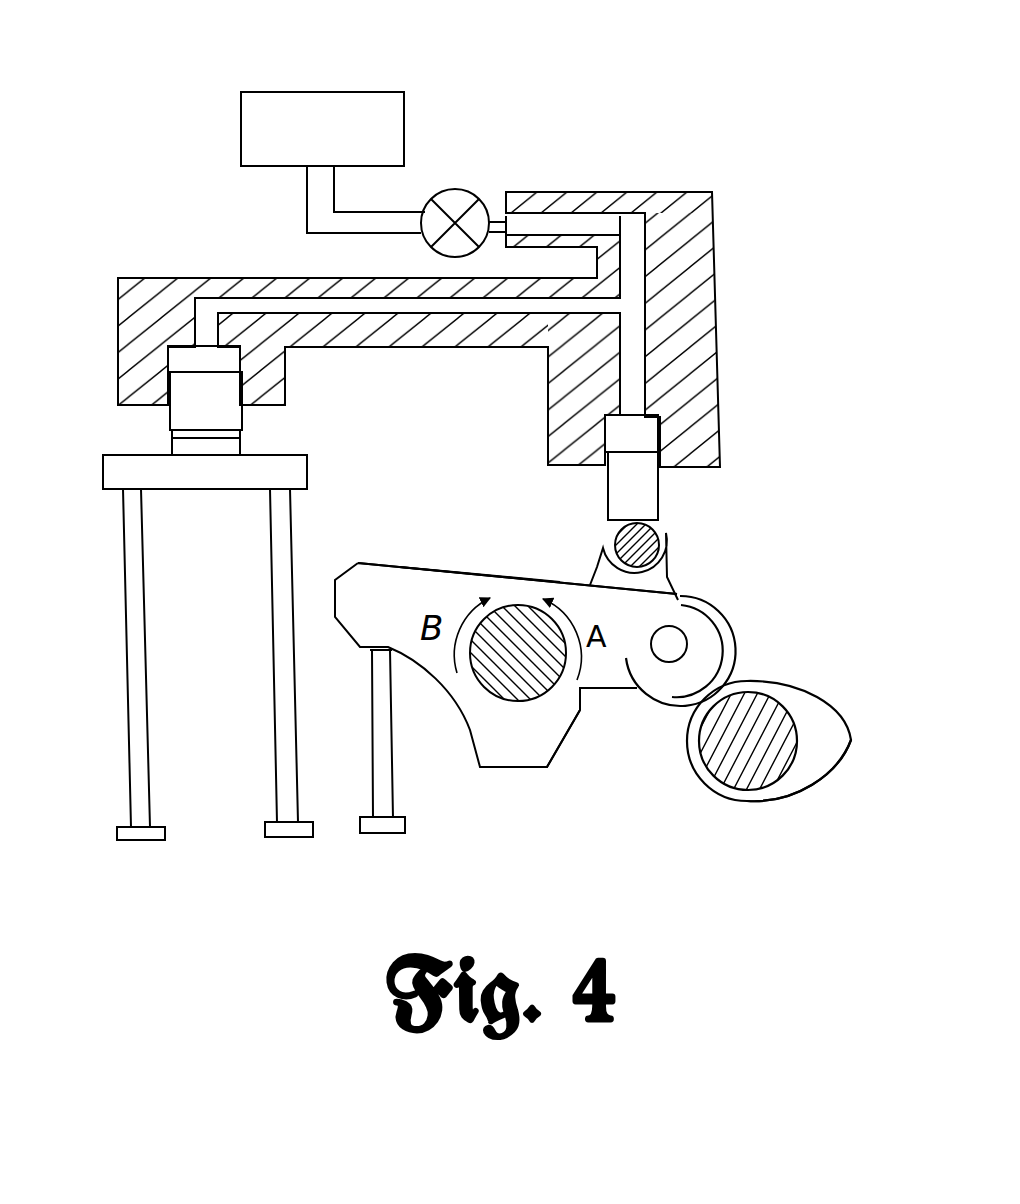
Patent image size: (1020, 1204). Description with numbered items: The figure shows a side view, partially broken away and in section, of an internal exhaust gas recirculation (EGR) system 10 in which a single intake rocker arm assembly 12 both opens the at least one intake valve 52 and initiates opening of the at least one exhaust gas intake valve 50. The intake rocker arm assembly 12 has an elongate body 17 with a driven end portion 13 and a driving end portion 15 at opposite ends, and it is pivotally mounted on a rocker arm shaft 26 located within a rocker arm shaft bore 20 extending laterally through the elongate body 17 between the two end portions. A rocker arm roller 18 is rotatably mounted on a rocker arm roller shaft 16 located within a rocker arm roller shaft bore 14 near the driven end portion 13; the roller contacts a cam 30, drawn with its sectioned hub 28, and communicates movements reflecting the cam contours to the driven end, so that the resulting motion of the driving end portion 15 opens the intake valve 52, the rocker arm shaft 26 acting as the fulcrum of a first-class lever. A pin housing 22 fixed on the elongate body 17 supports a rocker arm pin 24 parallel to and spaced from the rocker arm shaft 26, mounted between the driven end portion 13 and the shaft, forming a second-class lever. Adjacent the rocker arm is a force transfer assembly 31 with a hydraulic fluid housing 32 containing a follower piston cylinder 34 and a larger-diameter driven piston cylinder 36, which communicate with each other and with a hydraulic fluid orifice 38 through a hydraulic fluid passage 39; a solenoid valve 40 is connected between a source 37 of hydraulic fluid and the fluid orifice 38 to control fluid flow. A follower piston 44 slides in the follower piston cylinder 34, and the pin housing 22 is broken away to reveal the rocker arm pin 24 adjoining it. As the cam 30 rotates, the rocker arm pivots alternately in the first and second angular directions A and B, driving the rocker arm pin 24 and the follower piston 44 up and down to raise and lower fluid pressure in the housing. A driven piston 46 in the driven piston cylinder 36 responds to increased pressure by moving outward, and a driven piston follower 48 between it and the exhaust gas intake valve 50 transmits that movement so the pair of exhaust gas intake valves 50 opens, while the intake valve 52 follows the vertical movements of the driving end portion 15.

The internal exhaust gas recirculation (EGR) system 10 is at (512, 554).
The intake rocker arm assembly 12 is at (389, 553).
The driven end portion 13 is at (762, 661).
The rocker arm roller shaft bore 14 is at (688, 637).
The driving end portion 15 is at (314, 582).
The rocker arm roller shaft 16 is at (717, 620).
The elongate body 17 is at (438, 571).
The rocker arm roller 18 is at (678, 657).
The rocker arm shaft bore 20 is at (492, 668).
The pin housing 22 is at (570, 583).
The rocker arm pin 24 is at (593, 570).
The rocker arm shaft 26 is at (563, 697).
The cam base circle 28 is at (793, 713).
The cam 30 is at (807, 683).
The force transfer assembly 31 is at (382, 387).
The hydraulic fluid housing 32 is at (717, 235).
The follower piston cylinder 34 is at (660, 427).
The driven piston cylinder 36 is at (168, 360).
The source of hydraulic fluid 37 is at (313, 92).
The hydraulic fluid orifice 38 is at (500, 224).
The hydraulic fluid passage 39 is at (647, 272).
The solenoid valve 40 is at (441, 192).
The follower piston 44 is at (660, 487).
The driven piston 46 is at (170, 418).
The driven piston follower 48 is at (170, 443).
The exhaust gas intake valve 50 is at (272, 647).
The intake valve 52 is at (372, 723).